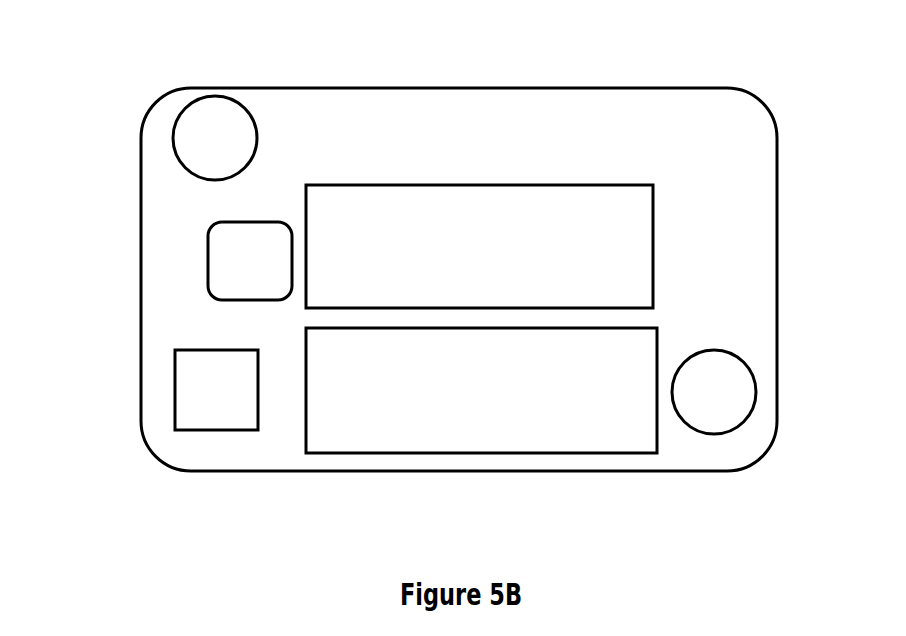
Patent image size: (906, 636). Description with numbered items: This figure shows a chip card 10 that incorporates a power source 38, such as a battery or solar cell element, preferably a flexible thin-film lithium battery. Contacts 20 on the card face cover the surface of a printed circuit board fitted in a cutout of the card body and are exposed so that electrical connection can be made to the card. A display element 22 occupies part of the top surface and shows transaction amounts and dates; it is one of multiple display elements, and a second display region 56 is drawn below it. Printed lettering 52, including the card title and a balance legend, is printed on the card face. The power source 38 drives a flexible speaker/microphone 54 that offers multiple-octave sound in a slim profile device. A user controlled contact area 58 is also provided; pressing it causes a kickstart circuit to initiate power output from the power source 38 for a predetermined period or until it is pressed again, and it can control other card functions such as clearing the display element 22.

The credit card 10 is at (110, 53).
The power source 38 is at (231, 156).
The contacts 20 is at (266, 272).
The display element 22 is at (502, 223).
The printed lettering 52 is at (497, 187).
The flexible speaker/microphone 54 is at (231, 404).
The signature / magnetic stripe panel 56 is at (494, 406).
The contact area 58 is at (728, 409).